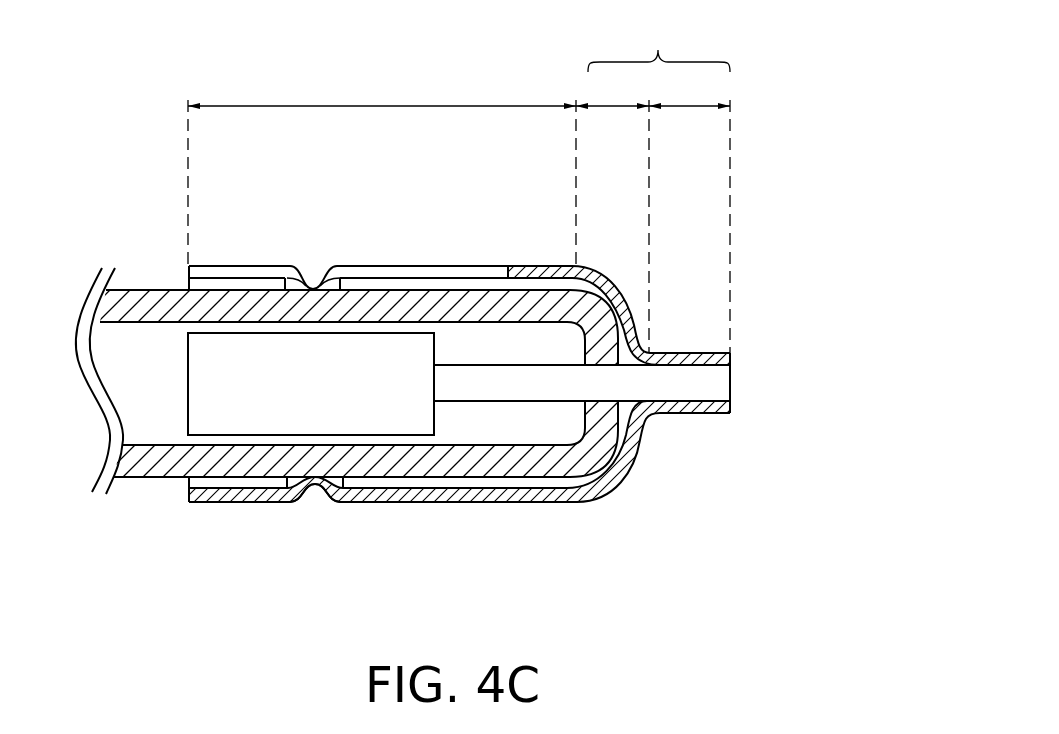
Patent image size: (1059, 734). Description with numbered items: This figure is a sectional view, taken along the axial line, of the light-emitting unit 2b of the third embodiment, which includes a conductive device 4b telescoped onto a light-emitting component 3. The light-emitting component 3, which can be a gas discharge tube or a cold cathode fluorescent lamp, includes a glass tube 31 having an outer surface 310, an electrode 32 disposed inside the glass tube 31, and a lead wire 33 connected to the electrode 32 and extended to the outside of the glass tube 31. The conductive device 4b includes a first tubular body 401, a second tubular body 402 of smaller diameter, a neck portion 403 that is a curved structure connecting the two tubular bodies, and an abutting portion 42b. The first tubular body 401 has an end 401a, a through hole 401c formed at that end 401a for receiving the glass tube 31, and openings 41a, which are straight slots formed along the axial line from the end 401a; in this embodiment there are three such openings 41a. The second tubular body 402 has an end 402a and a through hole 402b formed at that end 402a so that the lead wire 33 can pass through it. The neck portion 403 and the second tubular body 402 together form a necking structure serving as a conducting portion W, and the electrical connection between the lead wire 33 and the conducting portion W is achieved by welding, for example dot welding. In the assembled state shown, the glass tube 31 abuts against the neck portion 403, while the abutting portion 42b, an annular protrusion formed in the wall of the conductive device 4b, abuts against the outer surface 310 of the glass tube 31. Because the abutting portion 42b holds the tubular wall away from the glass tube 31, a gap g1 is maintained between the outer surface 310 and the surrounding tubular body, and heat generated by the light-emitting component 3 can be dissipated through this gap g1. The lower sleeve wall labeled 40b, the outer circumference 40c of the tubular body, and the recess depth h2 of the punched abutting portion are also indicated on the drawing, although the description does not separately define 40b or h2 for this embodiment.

The light-emitting unit 2b is at (102, 45).
The light-emitting component 3 is at (143, 284).
The conducting portion W is at (677, 39).
The first tubular body 401 is at (382, 169).
The neck portion 403 is at (612, 213).
The second tubular body 402 is at (689, 243).
The end 401a is at (188, 280).
The through hole 401c is at (187, 289).
The openings 41a is at (348, 266).
The electrode 32 is at (388, 355).
The glass tube 31 is at (513, 312).
The lead wire 33 is at (692, 383).
The conductive device 4b is at (452, 246).
The end 402a is at (730, 361).
The through hole 402b is at (730, 395).
The outer surface 310 is at (152, 478).
The lower sleeve wall 40b is at (202, 503).
The outer circumference 40c is at (237, 503).
The abutting portion 42b is at (288, 503).
The recess height h2 is at (320, 503).
The gap g1 is at (478, 503).